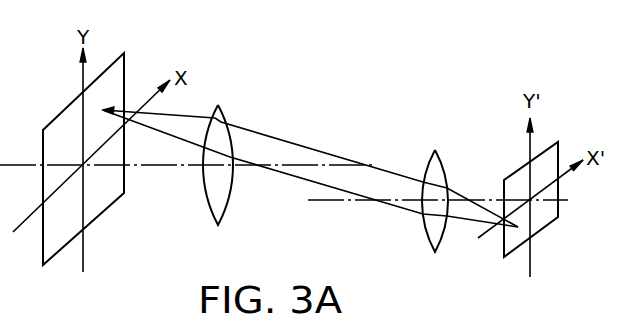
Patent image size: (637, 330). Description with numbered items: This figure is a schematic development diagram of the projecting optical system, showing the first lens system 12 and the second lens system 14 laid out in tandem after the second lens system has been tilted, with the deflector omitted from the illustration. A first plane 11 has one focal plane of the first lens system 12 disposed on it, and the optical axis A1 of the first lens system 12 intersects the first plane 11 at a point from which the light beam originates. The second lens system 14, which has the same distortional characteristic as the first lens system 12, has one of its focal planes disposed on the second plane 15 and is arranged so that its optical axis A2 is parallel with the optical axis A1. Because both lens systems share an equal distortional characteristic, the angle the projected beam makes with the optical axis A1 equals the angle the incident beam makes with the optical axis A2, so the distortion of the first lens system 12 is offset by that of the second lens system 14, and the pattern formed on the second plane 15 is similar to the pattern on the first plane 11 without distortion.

The first plane 11 is at (53, 247).
The first lens system 12 is at (223, 207).
The second lens system 14 is at (432, 233).
The second plane 15 is at (503, 253).
The optical axis of the first lens system A1 is at (172, 167).
The optical axis of the second lens system A2 is at (355, 202).